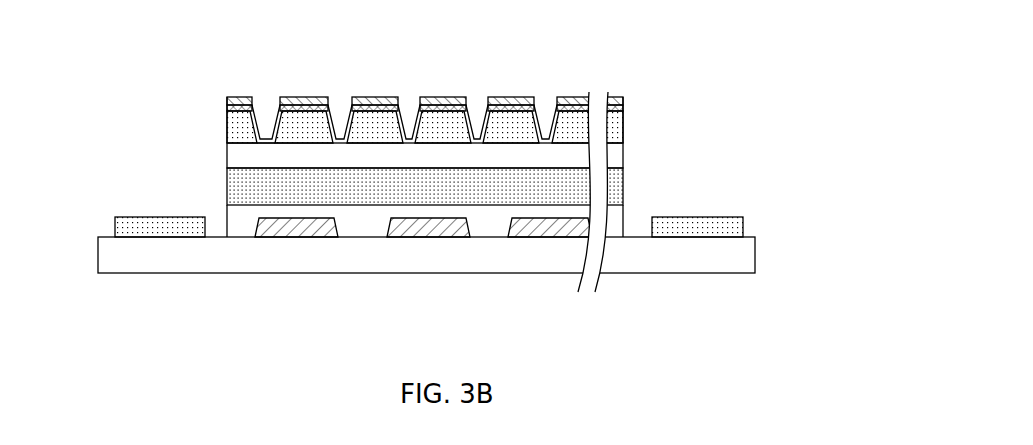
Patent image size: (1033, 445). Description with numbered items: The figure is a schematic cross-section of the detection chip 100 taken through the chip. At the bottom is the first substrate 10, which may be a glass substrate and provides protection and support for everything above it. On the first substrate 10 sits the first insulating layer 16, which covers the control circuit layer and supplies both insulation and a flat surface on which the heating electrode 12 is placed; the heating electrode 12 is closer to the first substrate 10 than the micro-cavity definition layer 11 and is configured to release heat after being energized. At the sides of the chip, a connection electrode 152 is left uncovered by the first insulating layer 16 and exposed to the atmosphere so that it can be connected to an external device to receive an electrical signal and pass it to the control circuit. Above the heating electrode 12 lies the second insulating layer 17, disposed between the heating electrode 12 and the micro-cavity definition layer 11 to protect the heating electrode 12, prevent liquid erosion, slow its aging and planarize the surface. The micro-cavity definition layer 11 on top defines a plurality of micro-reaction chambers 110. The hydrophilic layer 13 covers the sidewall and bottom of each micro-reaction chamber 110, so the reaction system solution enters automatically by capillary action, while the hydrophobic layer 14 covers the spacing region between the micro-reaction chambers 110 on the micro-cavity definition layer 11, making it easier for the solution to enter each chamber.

The detection chip 100 is at (868, 45).
The first substrate 10 is at (725, 257).
The connection electrode 152 is at (150, 226).
The first insulating layer 16 is at (367, 212).
The heating electrode 12 is at (250, 183).
The second insulating layer 17 is at (250, 160).
The micro-cavity definition layer 11 is at (227, 126).
The hydrophilic layer 13 is at (335, 118).
The hydrophobic layer 14 is at (438, 95).
The micro-reaction chamber 110 is at (262, 117).